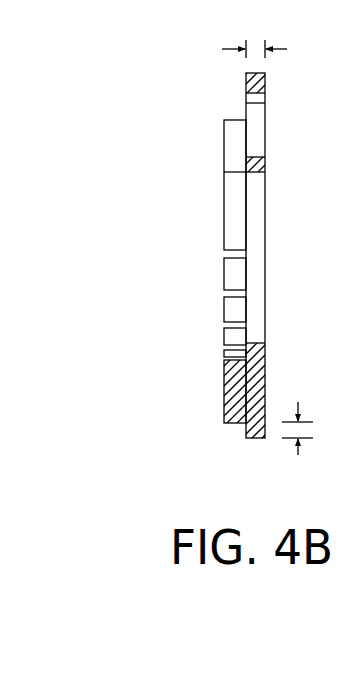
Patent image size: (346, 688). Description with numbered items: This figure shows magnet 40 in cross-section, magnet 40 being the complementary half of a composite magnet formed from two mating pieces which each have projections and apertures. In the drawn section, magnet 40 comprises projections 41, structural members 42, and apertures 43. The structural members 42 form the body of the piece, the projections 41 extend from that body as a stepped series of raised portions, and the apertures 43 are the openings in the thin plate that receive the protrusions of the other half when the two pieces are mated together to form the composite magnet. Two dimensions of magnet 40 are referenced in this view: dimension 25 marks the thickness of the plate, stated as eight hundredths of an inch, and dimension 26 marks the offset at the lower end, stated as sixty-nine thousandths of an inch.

The magnet 40 is at (211, 94).
The projections 41 is at (224, 388).
The structural members 42 is at (265, 370).
The apertures 43 is at (265, 130).
The dimension 25 is at (267, 50).
The dimension 26 is at (297, 416).